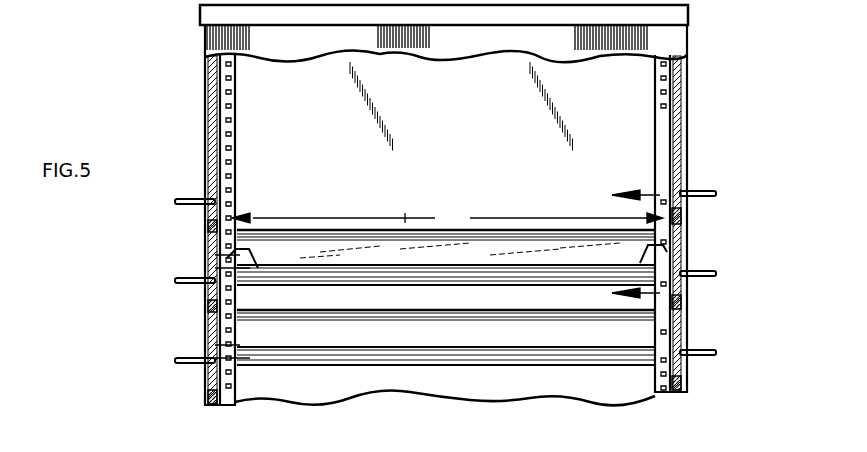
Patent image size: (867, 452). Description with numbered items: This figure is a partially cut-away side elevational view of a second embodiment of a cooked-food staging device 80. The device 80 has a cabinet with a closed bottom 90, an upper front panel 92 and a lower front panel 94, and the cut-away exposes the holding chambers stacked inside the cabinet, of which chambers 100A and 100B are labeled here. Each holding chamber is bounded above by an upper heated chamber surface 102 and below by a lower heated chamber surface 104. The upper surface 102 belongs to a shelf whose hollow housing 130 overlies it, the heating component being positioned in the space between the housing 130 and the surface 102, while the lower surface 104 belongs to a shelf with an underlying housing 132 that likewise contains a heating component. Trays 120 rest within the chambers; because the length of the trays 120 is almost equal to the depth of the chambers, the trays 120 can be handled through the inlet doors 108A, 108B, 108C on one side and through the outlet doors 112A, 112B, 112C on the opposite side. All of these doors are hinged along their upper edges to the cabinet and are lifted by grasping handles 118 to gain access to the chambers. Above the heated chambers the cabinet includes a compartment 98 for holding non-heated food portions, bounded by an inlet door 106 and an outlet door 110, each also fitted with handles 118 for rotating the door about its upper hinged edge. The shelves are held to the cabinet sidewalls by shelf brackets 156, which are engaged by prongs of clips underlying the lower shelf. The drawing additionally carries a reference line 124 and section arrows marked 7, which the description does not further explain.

The cooked-food staging device 80 is at (130, 178).
The closed bottom 90 is at (82, 4).
The lower front panel 94 is at (118, 4).
The upper front panel 92 is at (205, 42).
The inlet door 106 is at (213, 110).
The shelf brackets 156 is at (231, 82).
The compartment 98 is at (680, 86).
The outlet door 110 is at (683, 133).
The handles 118 is at (196, 198).
The inlet door 108A is at (209, 230).
The inlet door 108B is at (208, 308).
The inlet door 108C is at (208, 394).
The outlet door 112A is at (682, 220).
The outlet door 112B is at (682, 303).
The outlet door 112C is at (682, 383).
The upper heated chamber surface 102 is at (210, 258).
The holding chamber 100A is at (214, 262).
The holding chamber 100B is at (214, 346).
The lower heated chamber surface 104 is at (213, 266).
The hollow housing 130 is at (330, 237).
The underlying housing 132 is at (423, 279).
The trays 120 is at (350, 254).
The reference line 124 is at (447, 215).
The section line for FIG. 7 is at (628, 245).